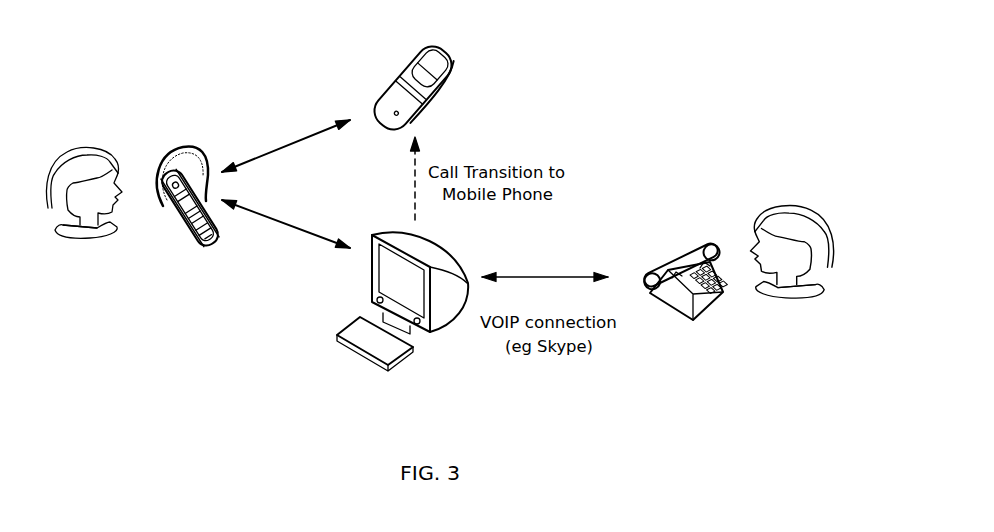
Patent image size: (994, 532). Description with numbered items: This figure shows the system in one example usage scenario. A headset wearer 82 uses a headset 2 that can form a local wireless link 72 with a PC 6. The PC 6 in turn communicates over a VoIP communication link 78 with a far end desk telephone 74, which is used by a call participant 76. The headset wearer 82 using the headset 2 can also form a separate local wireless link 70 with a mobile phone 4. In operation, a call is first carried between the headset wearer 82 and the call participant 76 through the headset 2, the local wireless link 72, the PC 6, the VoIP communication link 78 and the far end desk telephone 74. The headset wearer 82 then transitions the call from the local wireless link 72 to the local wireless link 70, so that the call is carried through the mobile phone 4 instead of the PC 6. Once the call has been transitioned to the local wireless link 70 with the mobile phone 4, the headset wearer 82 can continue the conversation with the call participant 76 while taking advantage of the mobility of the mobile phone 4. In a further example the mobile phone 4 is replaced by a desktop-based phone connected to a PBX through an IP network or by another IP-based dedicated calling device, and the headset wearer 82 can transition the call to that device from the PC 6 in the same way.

The headset 2 is at (177, 223).
The mobile phone 4 is at (377, 63).
The PC 6 is at (445, 332).
The local wireless link 70 is at (286, 145).
The local wireless link 72 is at (286, 226).
The far end desk telephone 74 is at (673, 352).
The call participant 76 is at (789, 293).
The VoIP communication link 78 is at (545, 266).
The headset wearer 82 is at (70, 240).